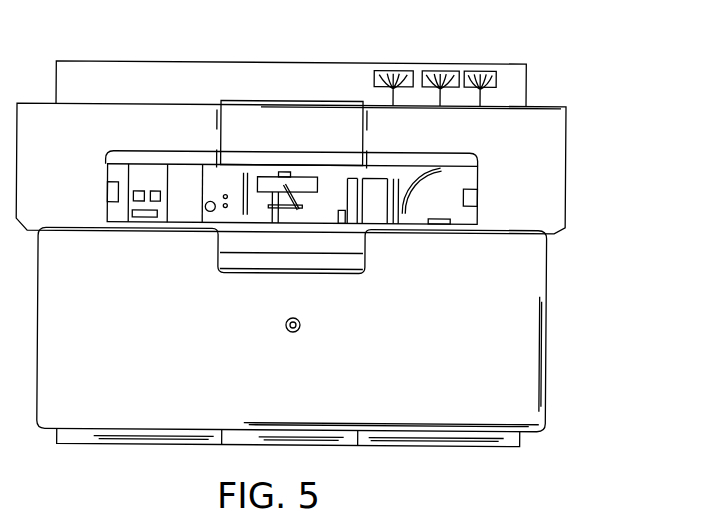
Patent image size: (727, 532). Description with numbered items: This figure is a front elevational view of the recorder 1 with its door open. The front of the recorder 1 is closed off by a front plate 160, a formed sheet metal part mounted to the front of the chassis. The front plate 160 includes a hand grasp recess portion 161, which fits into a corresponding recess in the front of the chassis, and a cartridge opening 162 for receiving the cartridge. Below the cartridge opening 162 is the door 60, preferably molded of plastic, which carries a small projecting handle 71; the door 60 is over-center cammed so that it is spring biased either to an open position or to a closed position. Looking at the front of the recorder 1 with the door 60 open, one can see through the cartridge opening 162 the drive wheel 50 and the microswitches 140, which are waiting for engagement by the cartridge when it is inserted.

The recorder 1 is at (337, 232).
The drive wheel 50 is at (290, 198).
The door 60 is at (430, 329).
The handle 71 is at (334, 260).
The microswitches 140 is at (163, 182).
The front plate 160 is at (542, 163).
The hand grasp recess portion 161 is at (360, 128).
The cartridge opening 162 is at (419, 153).